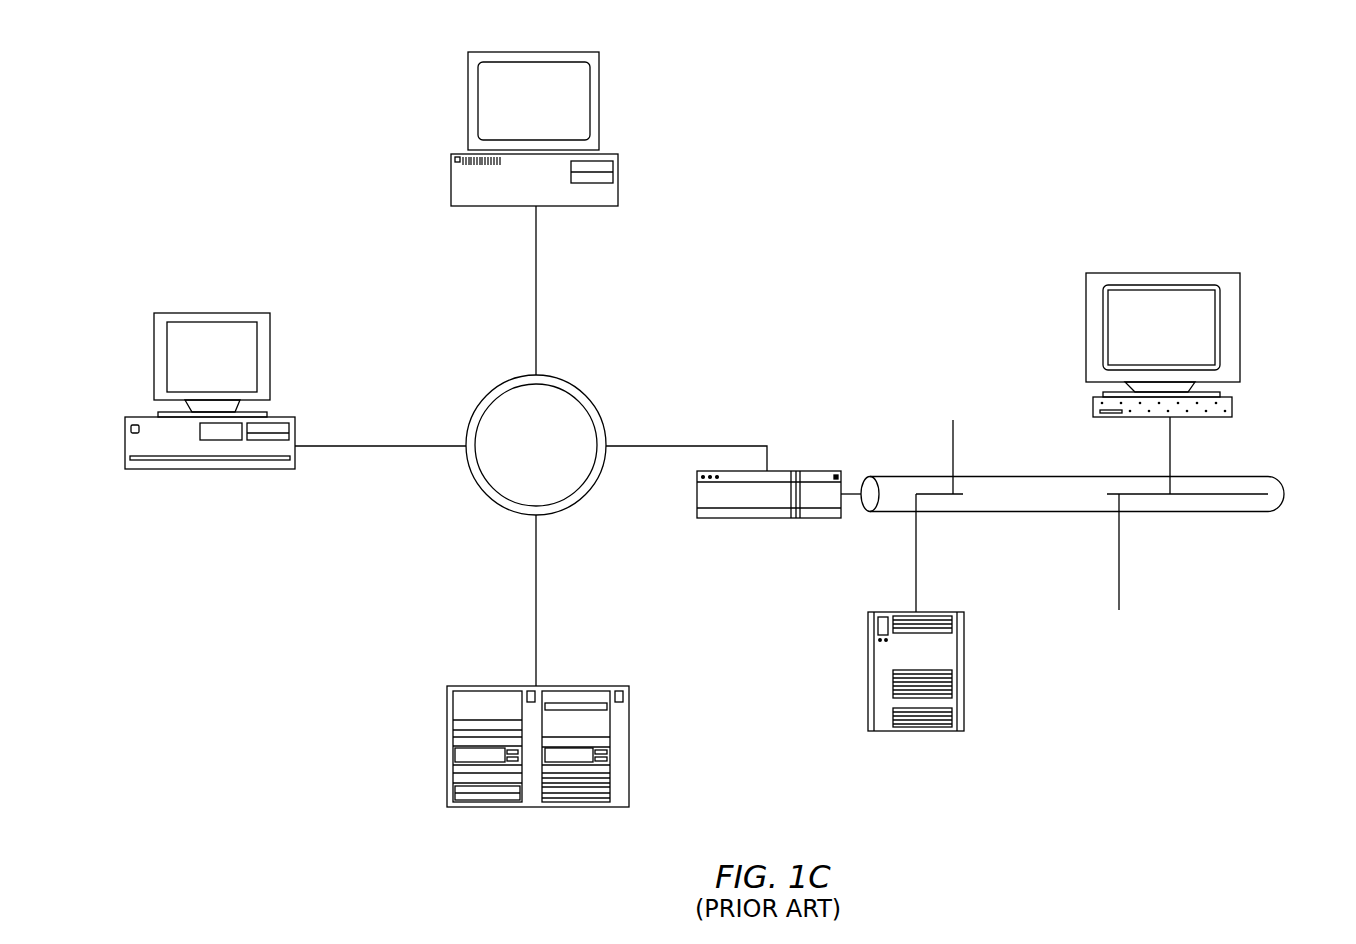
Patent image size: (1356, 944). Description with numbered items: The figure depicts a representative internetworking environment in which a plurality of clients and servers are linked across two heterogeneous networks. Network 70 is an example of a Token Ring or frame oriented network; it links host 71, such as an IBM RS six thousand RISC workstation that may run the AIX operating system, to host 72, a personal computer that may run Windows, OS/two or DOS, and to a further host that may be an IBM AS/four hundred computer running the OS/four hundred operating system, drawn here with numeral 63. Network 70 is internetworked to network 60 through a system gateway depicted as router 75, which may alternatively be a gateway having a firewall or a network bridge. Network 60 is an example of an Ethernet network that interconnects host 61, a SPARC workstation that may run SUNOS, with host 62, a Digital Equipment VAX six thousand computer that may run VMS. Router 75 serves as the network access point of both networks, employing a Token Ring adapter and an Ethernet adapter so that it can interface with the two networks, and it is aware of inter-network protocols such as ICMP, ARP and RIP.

The network 60 is at (602, 422).
The host 61 is at (125, 427).
The host 62 is at (618, 183).
The IBM AS/400 computer 63 is at (629, 717).
The network 70 is at (1284, 490).
The host 71 is at (1232, 405).
The host 72 is at (964, 670).
The router 75 is at (817, 470).